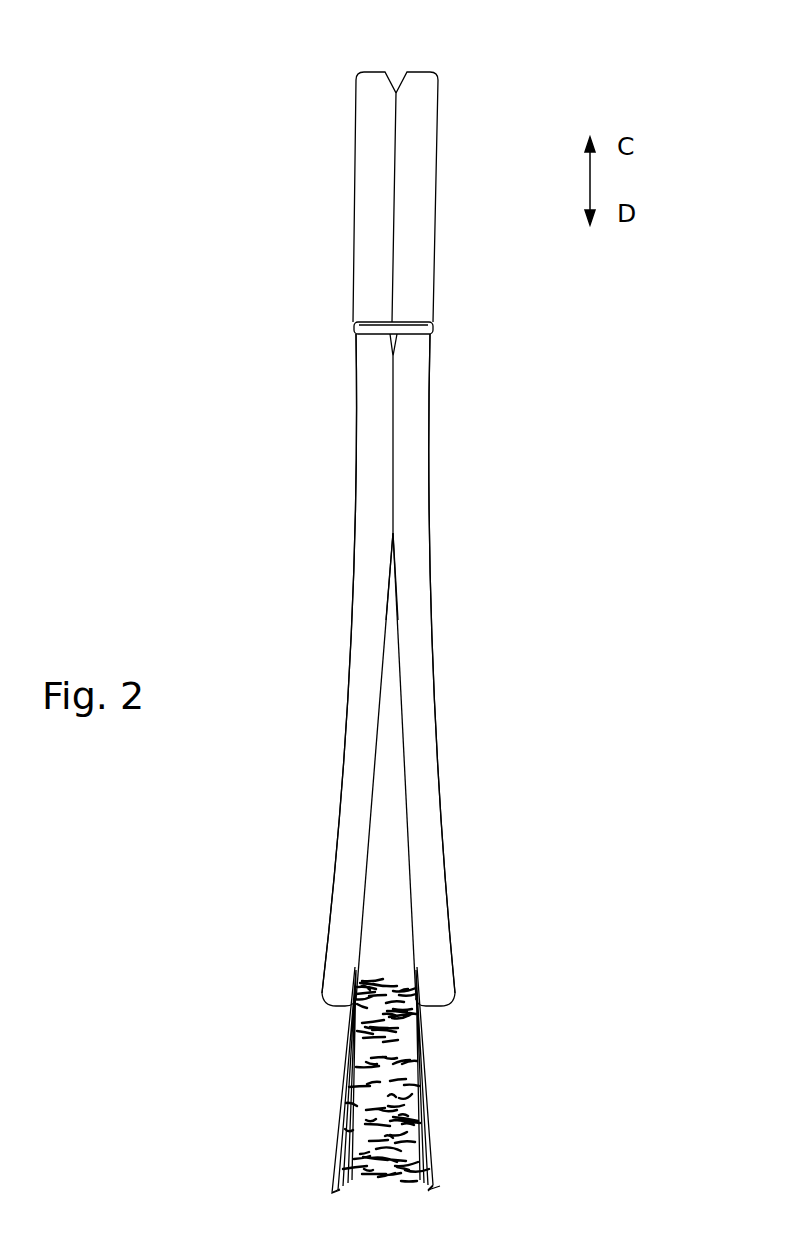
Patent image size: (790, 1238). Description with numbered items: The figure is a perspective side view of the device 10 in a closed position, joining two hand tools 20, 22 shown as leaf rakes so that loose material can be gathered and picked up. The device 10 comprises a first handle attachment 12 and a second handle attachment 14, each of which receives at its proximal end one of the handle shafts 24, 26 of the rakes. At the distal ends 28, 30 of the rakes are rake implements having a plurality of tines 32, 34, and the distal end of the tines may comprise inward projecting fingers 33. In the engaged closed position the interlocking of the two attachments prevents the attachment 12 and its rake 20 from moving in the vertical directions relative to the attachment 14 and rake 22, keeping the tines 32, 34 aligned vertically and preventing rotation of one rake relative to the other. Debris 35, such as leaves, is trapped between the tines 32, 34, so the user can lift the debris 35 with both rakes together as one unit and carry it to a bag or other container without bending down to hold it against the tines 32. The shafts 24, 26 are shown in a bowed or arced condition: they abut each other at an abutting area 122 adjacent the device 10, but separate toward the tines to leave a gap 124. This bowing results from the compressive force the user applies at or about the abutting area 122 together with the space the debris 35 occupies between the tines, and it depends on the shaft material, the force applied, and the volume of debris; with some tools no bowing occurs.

The device 10 is at (490, 113).
The first handle attachment 12 is at (367, 190).
The second handle attachment 14 is at (427, 197).
The hand tool 20 is at (292, 533).
The hand tool 22 is at (477, 525).
The abutting area 122 is at (393, 443).
The gap 124 is at (390, 617).
The handle shaft 24 is at (348, 640).
The handle shaft 26 is at (430, 638).
The distal end 28 is at (338, 990).
The distal end 30 is at (440, 985).
The tines 32 is at (353, 1068).
The tines 34 is at (395, 1062).
The inward projecting fingers 33 is at (428, 1190).
The debris 35 is at (392, 975).